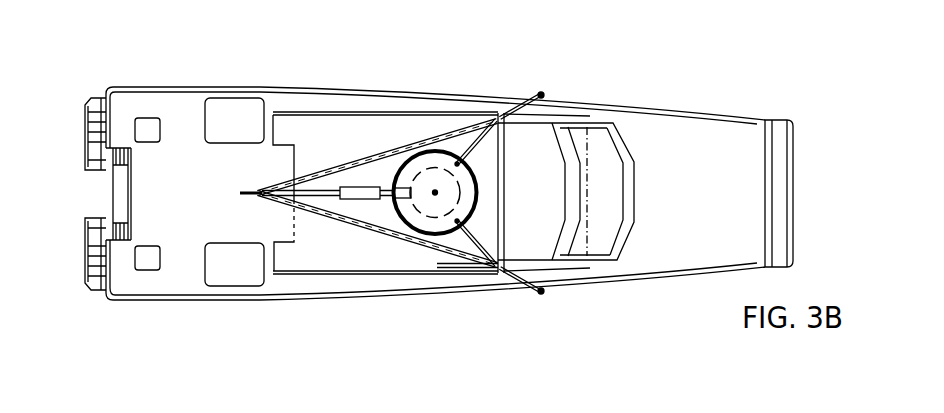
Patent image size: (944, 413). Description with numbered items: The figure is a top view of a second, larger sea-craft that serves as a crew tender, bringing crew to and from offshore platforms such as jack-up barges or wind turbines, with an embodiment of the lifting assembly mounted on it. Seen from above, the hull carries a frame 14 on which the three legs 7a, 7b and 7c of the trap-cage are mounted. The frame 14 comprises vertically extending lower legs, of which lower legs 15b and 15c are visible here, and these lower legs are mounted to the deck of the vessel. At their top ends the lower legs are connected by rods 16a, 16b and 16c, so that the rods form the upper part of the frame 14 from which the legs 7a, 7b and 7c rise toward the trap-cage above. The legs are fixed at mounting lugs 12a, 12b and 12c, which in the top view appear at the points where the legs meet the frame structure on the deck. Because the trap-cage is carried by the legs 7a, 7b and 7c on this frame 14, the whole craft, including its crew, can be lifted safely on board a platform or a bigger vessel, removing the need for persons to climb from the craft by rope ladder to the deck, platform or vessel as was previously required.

The mounting lug 12a is at (243, 192).
The mounting lug 12b is at (543, 293).
The mounting lug 12c is at (540, 92).
The frame 14 is at (310, 155).
The leg 7a is at (380, 187).
The leg 7b is at (466, 232).
The leg 7c is at (468, 151).
The lower leg 15b is at (520, 279).
The lower leg 15c is at (516, 108).
The rod 16a is at (402, 240).
The rod 16b is at (417, 133).
The rod 16c is at (483, 268).